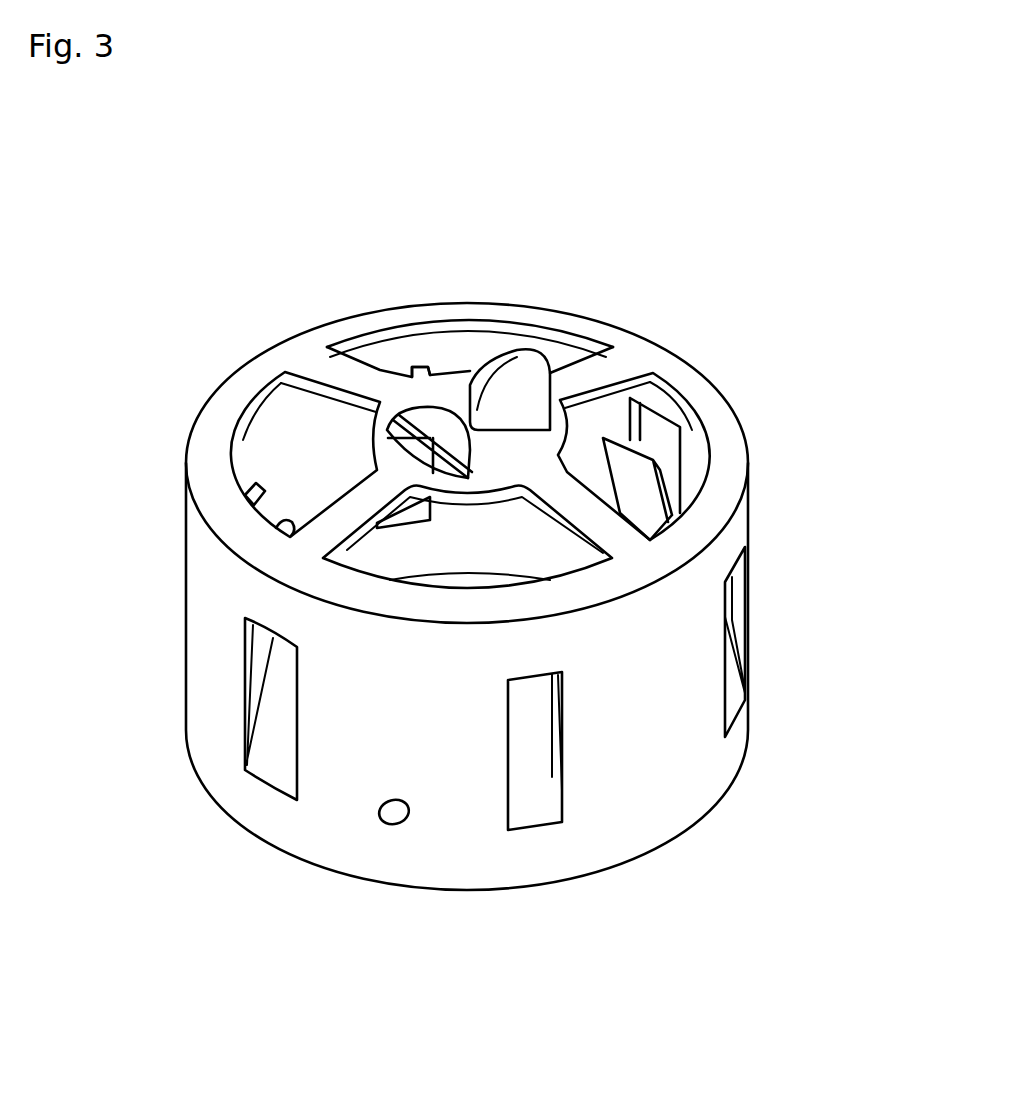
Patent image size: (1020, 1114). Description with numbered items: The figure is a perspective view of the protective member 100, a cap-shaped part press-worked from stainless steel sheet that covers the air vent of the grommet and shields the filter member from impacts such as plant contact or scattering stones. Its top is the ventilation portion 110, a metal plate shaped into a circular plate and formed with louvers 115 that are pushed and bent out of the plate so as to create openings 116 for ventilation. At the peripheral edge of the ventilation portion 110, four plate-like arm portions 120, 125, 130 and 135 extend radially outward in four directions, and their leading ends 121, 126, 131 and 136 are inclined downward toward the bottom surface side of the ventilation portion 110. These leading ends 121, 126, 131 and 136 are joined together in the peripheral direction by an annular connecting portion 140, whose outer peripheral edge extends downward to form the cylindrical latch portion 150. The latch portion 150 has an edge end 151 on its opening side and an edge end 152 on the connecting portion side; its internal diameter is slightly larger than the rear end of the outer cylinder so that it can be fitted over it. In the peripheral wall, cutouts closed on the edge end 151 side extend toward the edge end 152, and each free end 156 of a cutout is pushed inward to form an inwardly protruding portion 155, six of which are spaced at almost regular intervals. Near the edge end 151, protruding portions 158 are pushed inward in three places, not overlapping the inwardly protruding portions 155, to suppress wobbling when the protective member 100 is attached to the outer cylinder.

The protective member 100 is at (673, 205).
The ventilation portion 110 is at (442, 410).
The louvers 115 is at (513, 400).
The openings 116 is at (422, 415).
The arm portion 120 is at (355, 503).
The leading end 121 is at (295, 560).
The arm portion 125 is at (360, 375).
The leading end 126 is at (298, 350).
The arm portion 130 is at (593, 373).
The leading end 131 is at (650, 349).
The arm portion 135 is at (593, 513).
The leading end 136 is at (655, 562).
The connecting portion 140 is at (705, 410).
The latch portion 150 is at (200, 555).
The edge end 151 is at (755, 737).
The edge end 152 is at (760, 497).
The inwardly protruding portion 155 is at (262, 505).
The free end 156 is at (262, 483).
The protruding portions 158 is at (355, 560).